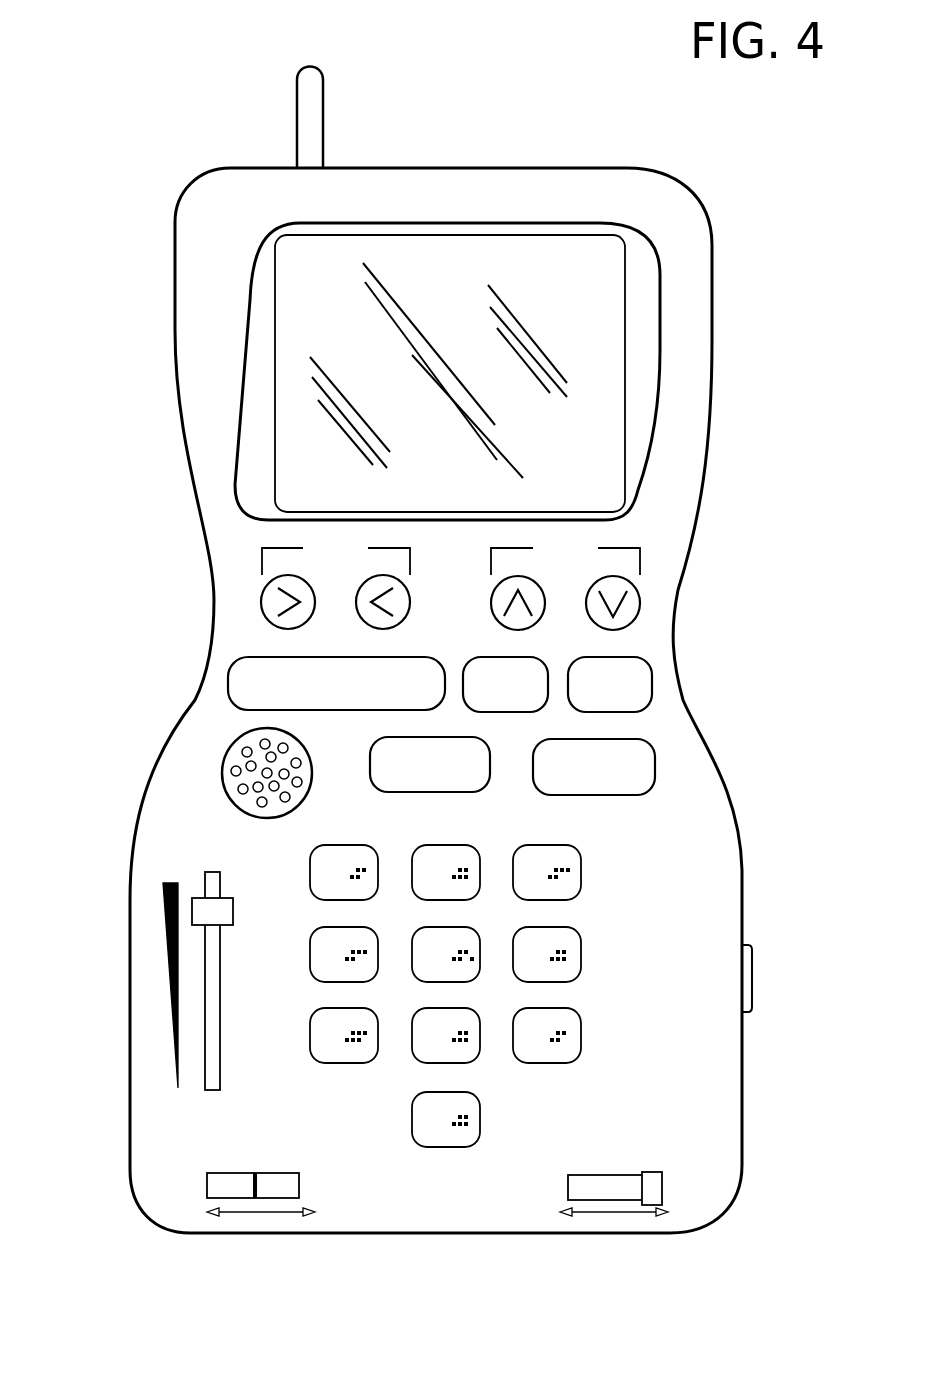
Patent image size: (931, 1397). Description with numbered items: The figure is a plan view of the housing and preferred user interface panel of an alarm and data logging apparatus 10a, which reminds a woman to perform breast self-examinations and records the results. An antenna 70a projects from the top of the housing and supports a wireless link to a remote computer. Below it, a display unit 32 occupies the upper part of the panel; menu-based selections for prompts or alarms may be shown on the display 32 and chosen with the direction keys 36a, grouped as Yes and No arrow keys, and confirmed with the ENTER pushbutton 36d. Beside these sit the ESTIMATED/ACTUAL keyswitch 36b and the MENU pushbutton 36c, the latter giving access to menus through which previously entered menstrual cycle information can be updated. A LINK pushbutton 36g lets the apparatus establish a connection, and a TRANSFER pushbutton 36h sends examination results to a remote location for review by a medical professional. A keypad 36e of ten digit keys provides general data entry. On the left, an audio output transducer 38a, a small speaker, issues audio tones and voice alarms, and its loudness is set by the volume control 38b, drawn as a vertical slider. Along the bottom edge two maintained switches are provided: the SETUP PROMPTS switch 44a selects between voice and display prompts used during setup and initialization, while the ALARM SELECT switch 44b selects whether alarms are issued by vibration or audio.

The alarm and data logging apparatus 10a is at (153, 105).
The antenna 70a is at (315, 110).
The display unit 32 is at (598, 284).
The direction keys 36a is at (655, 560).
The ESTIMATED/ACTUAL keyswitch 36b is at (258, 662).
The MENU pushbutton 36c is at (488, 660).
The ENTER pushbutton 36d is at (650, 672).
The keypad 36e is at (622, 915).
The LINK pushbutton 36g is at (430, 792).
The TRANSFER pushbutton 36h is at (590, 795).
The audio output transducer 38a is at (225, 783).
The volume control 38b is at (213, 963).
The SETUP PROMPTS switch 44a is at (172, 1167).
The ALARM SELECT switch 44b is at (685, 1140).